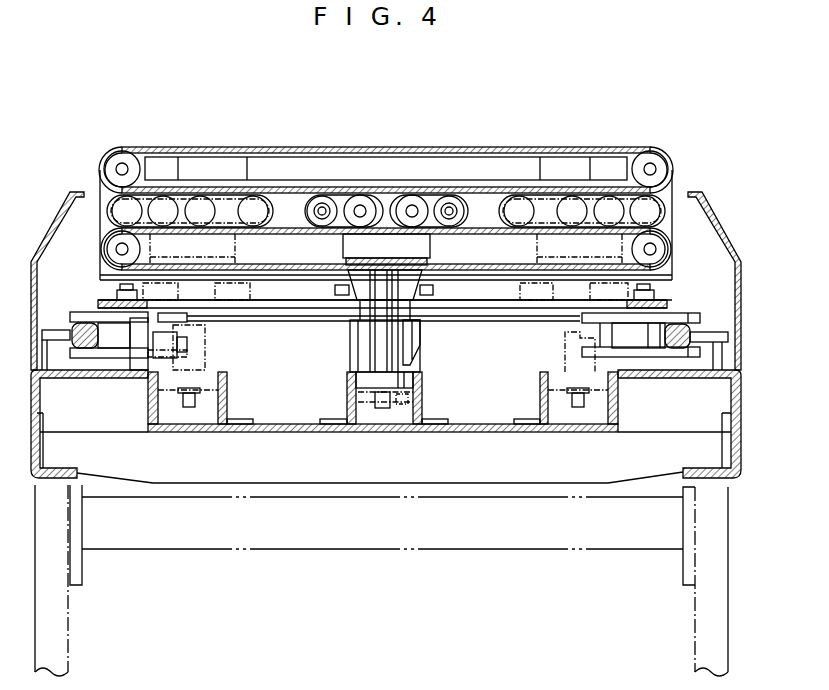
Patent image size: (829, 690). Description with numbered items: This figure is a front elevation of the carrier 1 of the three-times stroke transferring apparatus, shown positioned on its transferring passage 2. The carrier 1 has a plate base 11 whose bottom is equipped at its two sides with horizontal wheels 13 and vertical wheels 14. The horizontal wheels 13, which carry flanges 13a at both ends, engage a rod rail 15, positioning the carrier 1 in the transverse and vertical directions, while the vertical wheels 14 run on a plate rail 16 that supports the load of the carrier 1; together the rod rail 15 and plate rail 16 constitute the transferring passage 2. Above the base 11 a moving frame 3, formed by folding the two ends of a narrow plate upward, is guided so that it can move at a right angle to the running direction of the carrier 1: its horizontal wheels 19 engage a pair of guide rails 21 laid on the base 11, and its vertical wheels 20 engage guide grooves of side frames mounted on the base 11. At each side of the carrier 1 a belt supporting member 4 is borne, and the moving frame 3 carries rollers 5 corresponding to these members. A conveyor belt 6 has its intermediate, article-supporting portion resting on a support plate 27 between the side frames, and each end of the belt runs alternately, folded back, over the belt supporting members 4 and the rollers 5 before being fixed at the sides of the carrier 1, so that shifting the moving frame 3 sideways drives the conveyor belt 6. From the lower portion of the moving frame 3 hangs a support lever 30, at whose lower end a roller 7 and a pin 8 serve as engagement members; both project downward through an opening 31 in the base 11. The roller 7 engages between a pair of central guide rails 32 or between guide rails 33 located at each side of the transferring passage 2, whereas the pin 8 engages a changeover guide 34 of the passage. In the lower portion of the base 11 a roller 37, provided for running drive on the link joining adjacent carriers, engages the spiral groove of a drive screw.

The carrier 1 is at (580, 107).
The transferring passage 2 is at (266, 580).
The moving frame 3 is at (414, 250).
The belt supporting member 4 is at (113, 158).
The roller 5 is at (406, 197).
The conveyor belt 6 is at (248, 147).
The roller 7 is at (420, 378).
The pin 8 is at (368, 395).
The plate base 11 is at (668, 305).
The horizontal wheel 13 is at (113, 338).
The flange 13a is at (582, 315).
The vertical wheel 14 is at (140, 368).
The rod rail 15 is at (80, 322).
The plate rail 16 is at (72, 377).
The horizontal wheel 19 is at (336, 287).
The vertical wheel 20 is at (312, 197).
The guide rail 21 is at (278, 293).
The support plate 27 is at (273, 158).
The support lever 30 is at (372, 355).
The opening 31 is at (472, 303).
The guide rail 32 is at (356, 410).
The guide rail 33 is at (160, 413).
The changeover guide 34 is at (405, 402).
The roller 37 is at (418, 347).